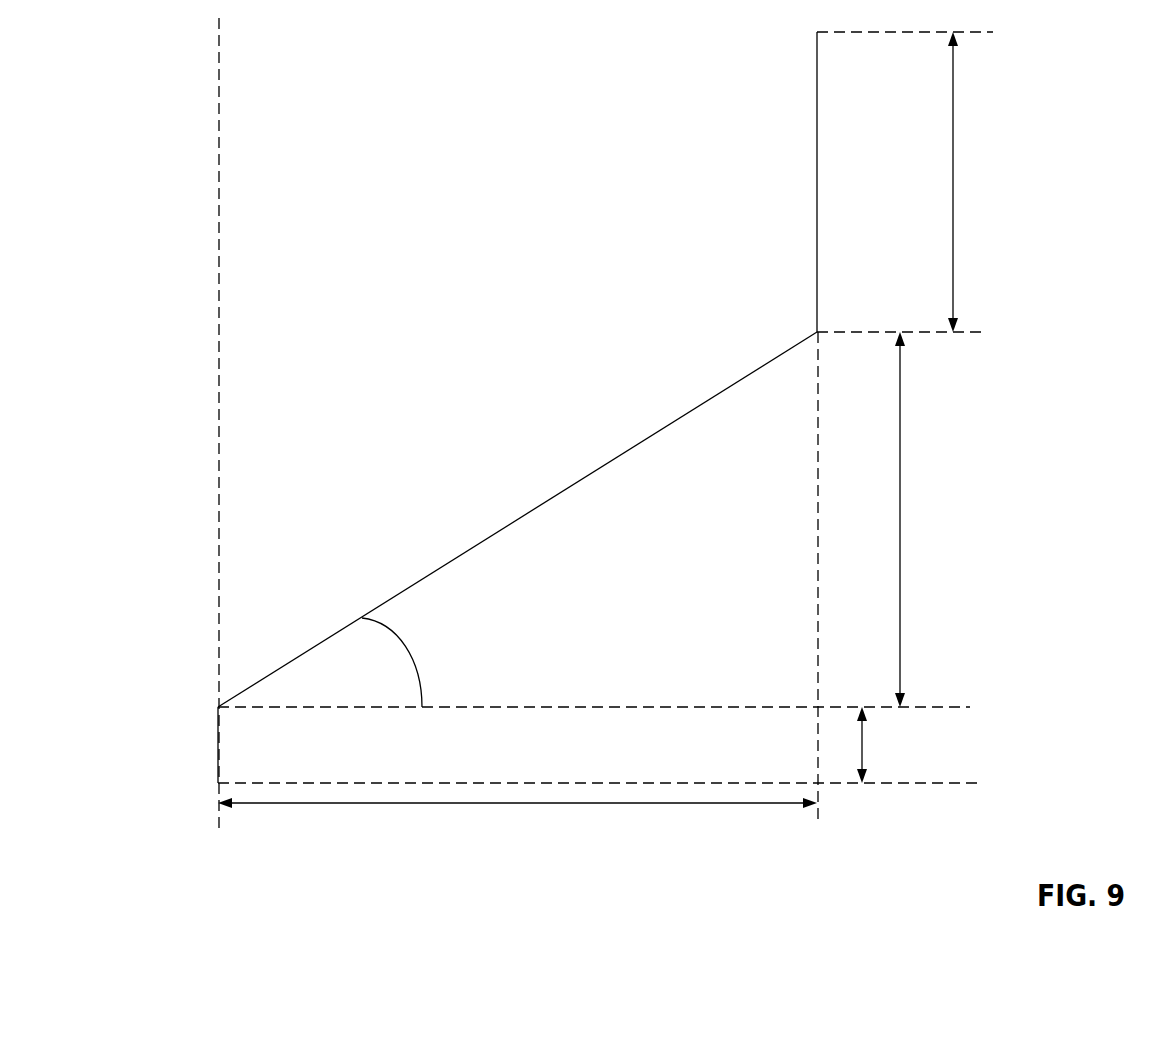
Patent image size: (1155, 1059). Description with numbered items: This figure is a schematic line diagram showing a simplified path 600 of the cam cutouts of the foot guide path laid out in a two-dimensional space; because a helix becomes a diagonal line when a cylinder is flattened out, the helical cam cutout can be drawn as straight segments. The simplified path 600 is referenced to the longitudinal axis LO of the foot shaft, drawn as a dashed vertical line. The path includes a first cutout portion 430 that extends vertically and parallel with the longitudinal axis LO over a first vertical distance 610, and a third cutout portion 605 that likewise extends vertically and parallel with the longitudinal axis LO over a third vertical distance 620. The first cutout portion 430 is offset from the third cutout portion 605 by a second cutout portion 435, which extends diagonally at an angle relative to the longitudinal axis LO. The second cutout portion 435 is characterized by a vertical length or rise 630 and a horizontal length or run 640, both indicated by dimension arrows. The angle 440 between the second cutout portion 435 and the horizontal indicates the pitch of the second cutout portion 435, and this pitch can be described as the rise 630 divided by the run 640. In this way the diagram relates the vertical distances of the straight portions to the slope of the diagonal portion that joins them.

The longitudinal axis LO is at (216, 115).
The simplified path 600 is at (455, 262).
The first cutout portion 430 is at (814, 155).
The second cutout portion 435 is at (590, 472).
The third cutout portion 605 is at (215, 744).
The angle 440 is at (415, 662).
The first vertical distance 610 is at (953, 172).
The rise 630 is at (900, 540).
The third vertical distance 620 is at (862, 750).
The run 640 is at (520, 803).